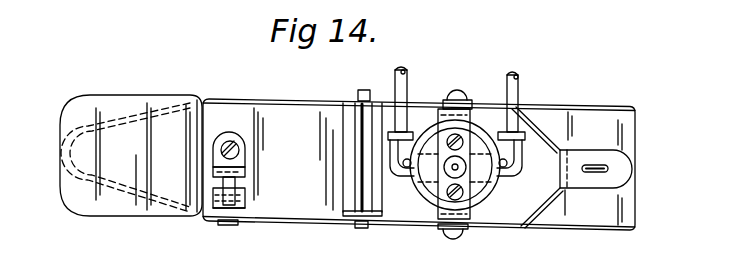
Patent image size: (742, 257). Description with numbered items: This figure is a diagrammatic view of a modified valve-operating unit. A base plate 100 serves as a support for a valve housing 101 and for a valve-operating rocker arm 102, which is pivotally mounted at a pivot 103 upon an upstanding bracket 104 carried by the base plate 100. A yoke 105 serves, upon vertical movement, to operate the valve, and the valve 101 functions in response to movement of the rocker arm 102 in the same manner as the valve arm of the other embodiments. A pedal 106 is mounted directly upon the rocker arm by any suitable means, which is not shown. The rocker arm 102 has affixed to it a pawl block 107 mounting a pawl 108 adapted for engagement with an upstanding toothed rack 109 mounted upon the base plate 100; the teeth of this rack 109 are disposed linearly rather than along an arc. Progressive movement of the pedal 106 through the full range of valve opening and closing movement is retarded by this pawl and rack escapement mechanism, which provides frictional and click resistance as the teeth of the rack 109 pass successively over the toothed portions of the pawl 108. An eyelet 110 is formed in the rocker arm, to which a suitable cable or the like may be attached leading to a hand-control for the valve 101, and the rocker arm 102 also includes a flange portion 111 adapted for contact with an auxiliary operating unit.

The base plate 100 is at (388, 159).
The valve housing 101 is at (497, 197).
The valve-operating rocker arm 102 is at (318, 100).
The pivot 103 is at (354, 212).
The upstanding bracket 104 is at (373, 197).
The yoke 105 is at (440, 124).
The pedal 106 is at (137, 95).
The pawl block 107 is at (236, 208).
The pawl 108 is at (246, 182).
The toothed rack 109 is at (242, 155).
The eyelet 110 is at (614, 162).
The flange portion 111 is at (623, 170).